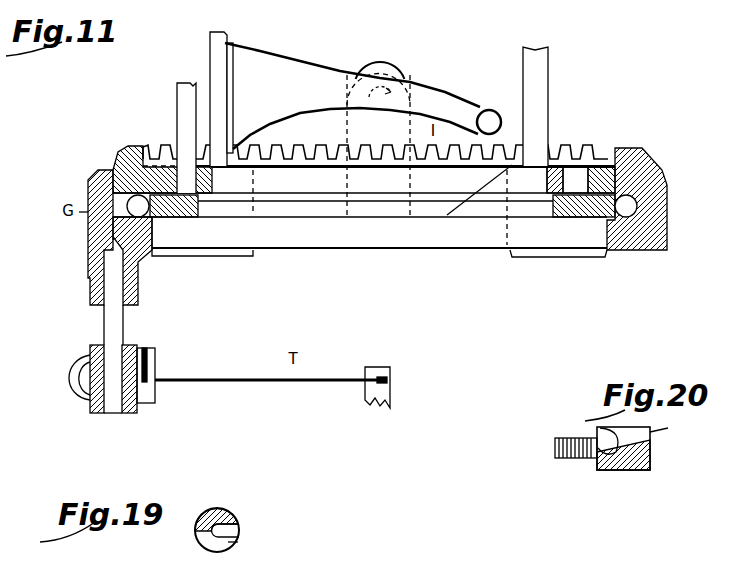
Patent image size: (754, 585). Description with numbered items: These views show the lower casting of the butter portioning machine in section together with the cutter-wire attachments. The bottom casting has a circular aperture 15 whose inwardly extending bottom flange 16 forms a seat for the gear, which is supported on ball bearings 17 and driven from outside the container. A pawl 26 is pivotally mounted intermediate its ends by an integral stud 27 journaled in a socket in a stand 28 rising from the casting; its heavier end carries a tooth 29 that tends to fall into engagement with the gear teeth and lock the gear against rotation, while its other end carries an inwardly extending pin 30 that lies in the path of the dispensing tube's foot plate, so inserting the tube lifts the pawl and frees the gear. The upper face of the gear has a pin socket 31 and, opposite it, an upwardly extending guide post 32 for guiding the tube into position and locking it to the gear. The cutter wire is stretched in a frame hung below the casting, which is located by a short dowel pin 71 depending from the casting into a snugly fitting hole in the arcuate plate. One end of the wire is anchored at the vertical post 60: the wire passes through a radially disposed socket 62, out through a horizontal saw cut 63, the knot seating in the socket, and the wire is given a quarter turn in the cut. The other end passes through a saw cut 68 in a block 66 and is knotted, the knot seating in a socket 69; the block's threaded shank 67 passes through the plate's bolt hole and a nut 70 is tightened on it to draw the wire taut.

In FIG. 11, the circular aperture 15 is at (467, 240).
In FIG. 11, the bottom flange 16 is at (638, 251).
In FIG. 11, the ball bearings 17 is at (668, 196).
In FIG. 11, the pawl 26 is at (352, 98).
In FIG. 11, the integral stud 27 is at (402, 78).
In FIG. 11, the stand 28 is at (398, 67).
In FIG. 11, the tooth 29 is at (238, 150).
In FIG. 11, the pin 30 is at (485, 110).
In FIG. 11, the pin socket 31 is at (578, 177).
In FIG. 11, the guide post 32 is at (177, 100).
In FIG. 11, the vertical post 60 is at (392, 405).
In FIG. 19, the vertical post 60 is at (218, 507).
In FIG. 19, the radially disposed socket 62 is at (240, 527).
In FIG. 11, the saw cut 63 is at (392, 380).
In FIG. 19, the saw cut 63 is at (238, 542).
In FIG. 11, the block 66 is at (156, 364).
In FIG. 20, the block 66 is at (624, 461).
In FIG. 20, the threaded shank 67 is at (573, 460).
In FIG. 11, the saw cut 68 is at (150, 350).
In FIG. 20, the saw cut 68 is at (670, 422).
In FIG. 20, the socket 69 is at (602, 434).
In FIG. 11, the nut 70 is at (87, 394).
In FIG. 11, the dowel pin 71 is at (103, 324).